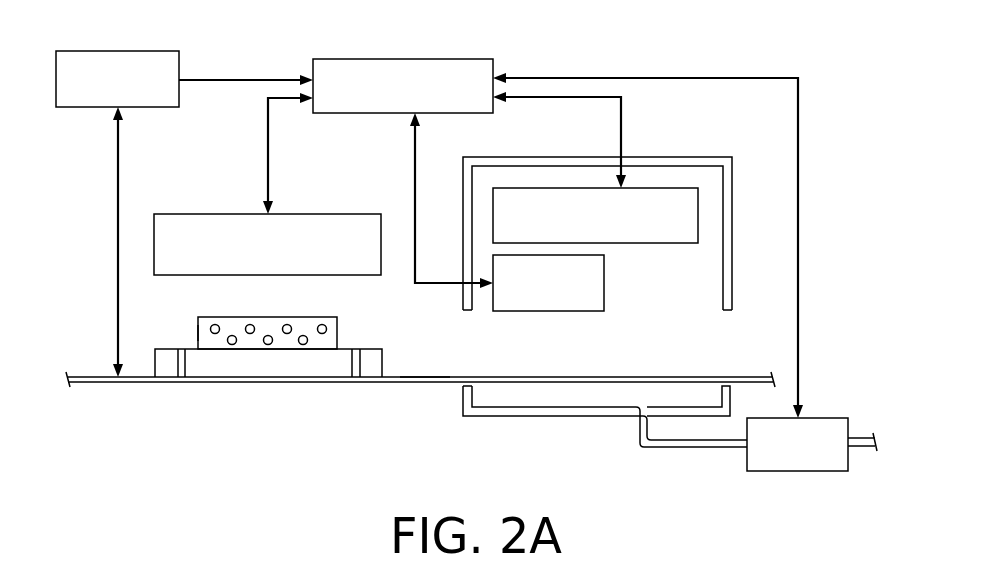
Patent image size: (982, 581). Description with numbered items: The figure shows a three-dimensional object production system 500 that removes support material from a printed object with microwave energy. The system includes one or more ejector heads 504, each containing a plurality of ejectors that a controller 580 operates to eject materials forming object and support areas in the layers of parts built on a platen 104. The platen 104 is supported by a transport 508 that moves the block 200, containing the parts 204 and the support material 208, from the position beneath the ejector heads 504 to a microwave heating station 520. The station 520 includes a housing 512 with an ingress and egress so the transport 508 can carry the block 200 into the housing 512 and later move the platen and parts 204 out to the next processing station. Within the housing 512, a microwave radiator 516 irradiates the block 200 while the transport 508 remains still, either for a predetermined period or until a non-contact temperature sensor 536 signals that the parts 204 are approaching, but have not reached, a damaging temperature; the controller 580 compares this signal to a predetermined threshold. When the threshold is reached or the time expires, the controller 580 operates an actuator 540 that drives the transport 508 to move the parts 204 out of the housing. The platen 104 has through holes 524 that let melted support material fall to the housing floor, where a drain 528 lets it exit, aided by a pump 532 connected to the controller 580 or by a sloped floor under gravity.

The three-dimensional object production system 500 is at (626, 46).
The microwave heating station 520 is at (680, 140).
The housing 512 is at (733, 252).
The microwave radiator 516 is at (632, 243).
The non-contact temperature sensor 536 is at (549, 311).
The actuator 540 is at (155, 107).
The controller 580 is at (365, 113).
The ejector heads 504 is at (311, 214).
The platen 104 is at (382, 360).
The through holes 524 is at (182, 382).
The block 200 is at (337, 331).
The parts 204 is at (304, 336).
The support material 208 is at (207, 338).
The transport 508 is at (426, 383).
The drain 528 is at (643, 407).
The pump 532 is at (820, 418).